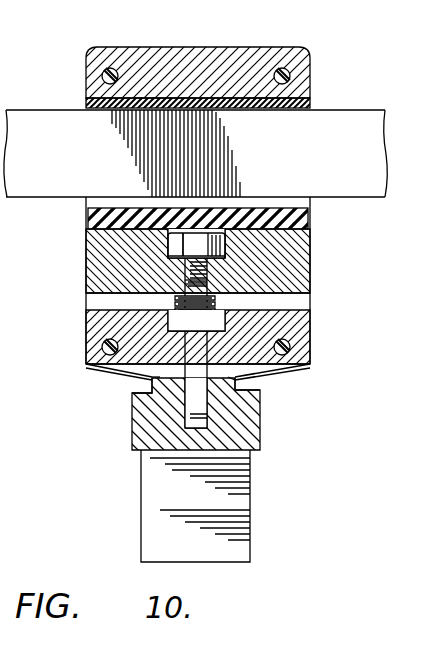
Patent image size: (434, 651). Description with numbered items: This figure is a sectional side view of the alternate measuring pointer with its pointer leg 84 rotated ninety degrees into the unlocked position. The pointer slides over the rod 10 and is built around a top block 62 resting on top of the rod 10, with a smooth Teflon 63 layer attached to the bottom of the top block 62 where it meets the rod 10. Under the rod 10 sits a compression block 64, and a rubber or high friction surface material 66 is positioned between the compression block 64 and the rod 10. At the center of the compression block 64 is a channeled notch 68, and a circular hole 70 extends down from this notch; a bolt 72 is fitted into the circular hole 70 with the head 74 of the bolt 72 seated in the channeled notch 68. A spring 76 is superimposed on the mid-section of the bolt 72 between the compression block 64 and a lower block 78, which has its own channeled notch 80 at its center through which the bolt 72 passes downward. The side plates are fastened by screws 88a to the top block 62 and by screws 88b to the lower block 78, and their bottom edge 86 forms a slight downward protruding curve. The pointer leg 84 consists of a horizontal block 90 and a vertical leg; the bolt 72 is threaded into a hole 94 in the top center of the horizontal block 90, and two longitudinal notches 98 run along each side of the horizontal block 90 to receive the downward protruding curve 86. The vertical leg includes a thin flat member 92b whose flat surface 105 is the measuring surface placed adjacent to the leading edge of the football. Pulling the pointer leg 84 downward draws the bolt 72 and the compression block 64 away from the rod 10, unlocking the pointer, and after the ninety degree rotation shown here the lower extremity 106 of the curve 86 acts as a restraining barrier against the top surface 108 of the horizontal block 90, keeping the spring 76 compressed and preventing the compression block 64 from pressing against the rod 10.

The rod 10 is at (324, 120).
The top block 62 is at (156, 48).
The Teflon 63 is at (88, 101).
The compression block 64 is at (296, 263).
The high friction surface material 66 is at (98, 222).
The channeled notch 68 is at (217, 241).
The circular hole 70 is at (188, 283).
The bolt 72 is at (206, 284).
The head of the bolt 74 is at (180, 248).
The spring 76 is at (215, 299).
The lower block 78 is at (296, 326).
The channeled notch 80 is at (174, 320).
The pointer leg 84 is at (141, 490).
The bottom edge 86 is at (292, 371).
The screws 88a is at (103, 70).
The screws 88b is at (102, 347).
The horizontal block 90 is at (250, 437).
The flat member 92b is at (252, 471).
The hole 94 is at (185, 419).
The longitudinal notches 98 is at (134, 393).
The flat surface 105 is at (215, 511).
The lower extremity 106 is at (230, 380).
The top surface 108 is at (160, 377).